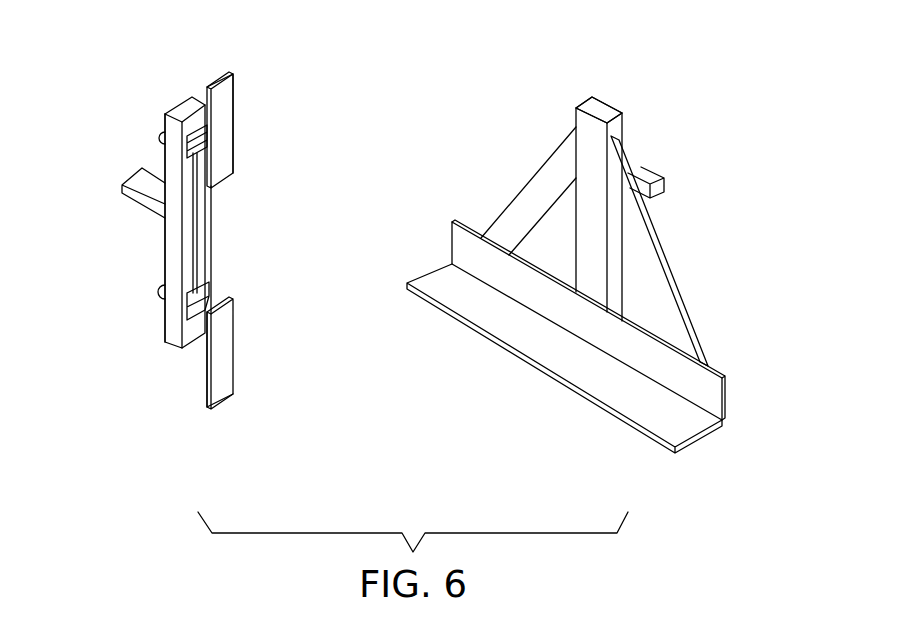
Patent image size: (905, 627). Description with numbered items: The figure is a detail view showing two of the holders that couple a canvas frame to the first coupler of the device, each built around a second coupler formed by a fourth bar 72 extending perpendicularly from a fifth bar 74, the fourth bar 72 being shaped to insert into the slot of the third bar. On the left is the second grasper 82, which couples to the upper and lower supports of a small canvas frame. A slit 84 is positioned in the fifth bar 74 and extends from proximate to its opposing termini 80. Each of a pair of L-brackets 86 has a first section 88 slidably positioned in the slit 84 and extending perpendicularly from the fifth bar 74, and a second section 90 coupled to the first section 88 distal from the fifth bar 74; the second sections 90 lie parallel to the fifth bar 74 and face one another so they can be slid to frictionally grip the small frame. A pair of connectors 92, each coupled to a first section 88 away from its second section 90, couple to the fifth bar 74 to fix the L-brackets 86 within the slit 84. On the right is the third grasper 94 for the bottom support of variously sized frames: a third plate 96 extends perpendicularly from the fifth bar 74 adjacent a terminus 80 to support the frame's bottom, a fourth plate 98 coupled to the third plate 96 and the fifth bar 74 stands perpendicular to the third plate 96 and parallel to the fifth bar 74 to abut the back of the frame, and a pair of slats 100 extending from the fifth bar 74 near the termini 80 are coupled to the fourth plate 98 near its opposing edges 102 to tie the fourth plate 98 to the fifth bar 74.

The fourth bar 72 is at (122, 190).
The fifth bar 74 is at (170, 248).
The opposing terminus 80 is at (183, 118).
The second grasper 82 is at (264, 156).
The slit 84 is at (193, 228).
The L-bracket 86 is at (228, 131).
The first section 88 is at (203, 299).
The second section 90 is at (222, 361).
The connector 92 is at (160, 141).
The third grasper 94 is at (562, 86).
The third plate 96 is at (585, 373).
The fourth plate 98 is at (660, 368).
The slat 100 is at (577, 178).
The opposing edge 102 is at (452, 252).